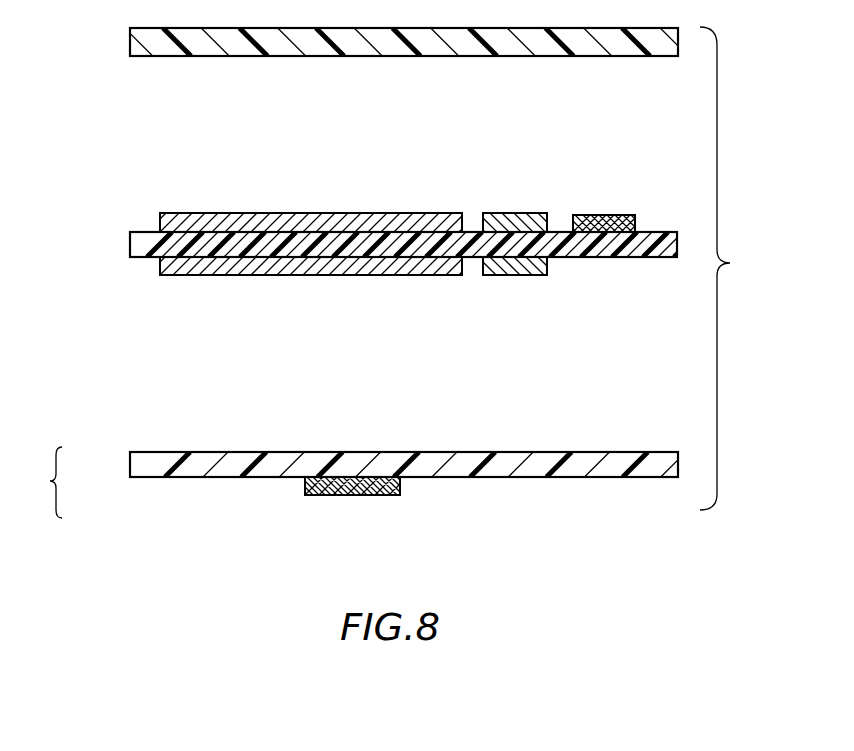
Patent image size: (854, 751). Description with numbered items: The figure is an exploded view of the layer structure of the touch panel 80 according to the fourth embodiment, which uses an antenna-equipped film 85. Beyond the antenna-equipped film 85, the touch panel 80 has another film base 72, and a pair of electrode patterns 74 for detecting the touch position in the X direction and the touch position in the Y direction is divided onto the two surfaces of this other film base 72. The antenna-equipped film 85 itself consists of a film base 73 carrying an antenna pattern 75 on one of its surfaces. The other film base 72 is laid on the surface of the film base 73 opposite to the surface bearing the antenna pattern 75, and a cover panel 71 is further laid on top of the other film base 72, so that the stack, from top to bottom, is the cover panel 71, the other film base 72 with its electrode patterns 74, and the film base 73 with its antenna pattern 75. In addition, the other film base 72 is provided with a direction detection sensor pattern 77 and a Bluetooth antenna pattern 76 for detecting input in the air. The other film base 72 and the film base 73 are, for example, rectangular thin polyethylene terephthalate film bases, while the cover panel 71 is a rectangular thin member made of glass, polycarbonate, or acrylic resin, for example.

The cover panel 71 is at (130, 40).
The other film base 72 is at (130, 243).
The film base 73 is at (130, 461).
The electrode patterns 74 is at (252, 213).
The antenna pattern 75 is at (305, 486).
The Bluetooth antenna pattern 76 is at (598, 215).
The direction detection sensor pattern 77 is at (512, 213).
The touch panel 80 is at (735, 268).
The antenna-equipped film 85 is at (37, 482).